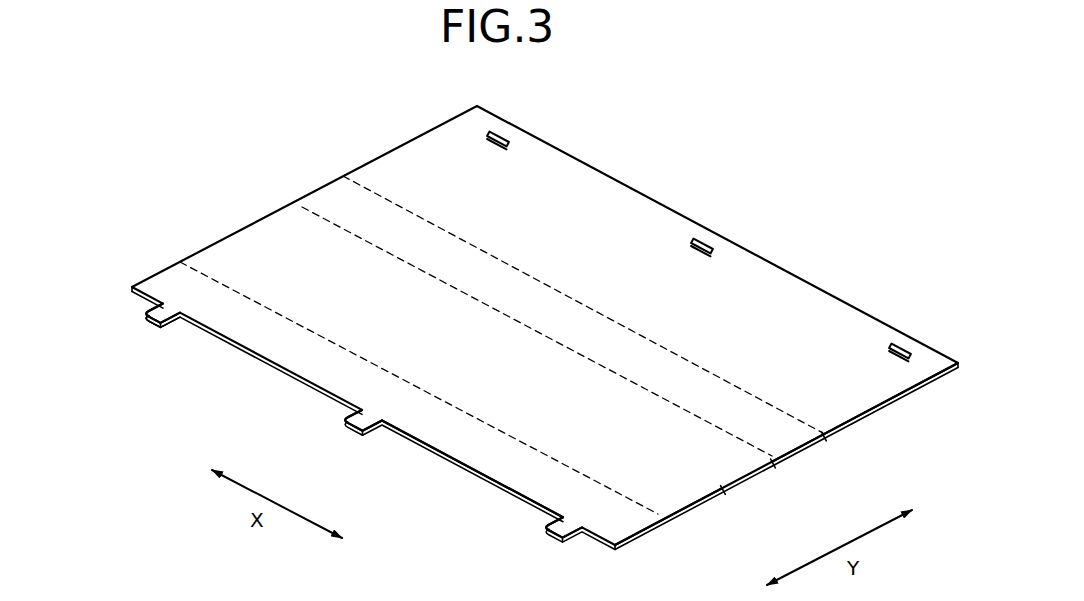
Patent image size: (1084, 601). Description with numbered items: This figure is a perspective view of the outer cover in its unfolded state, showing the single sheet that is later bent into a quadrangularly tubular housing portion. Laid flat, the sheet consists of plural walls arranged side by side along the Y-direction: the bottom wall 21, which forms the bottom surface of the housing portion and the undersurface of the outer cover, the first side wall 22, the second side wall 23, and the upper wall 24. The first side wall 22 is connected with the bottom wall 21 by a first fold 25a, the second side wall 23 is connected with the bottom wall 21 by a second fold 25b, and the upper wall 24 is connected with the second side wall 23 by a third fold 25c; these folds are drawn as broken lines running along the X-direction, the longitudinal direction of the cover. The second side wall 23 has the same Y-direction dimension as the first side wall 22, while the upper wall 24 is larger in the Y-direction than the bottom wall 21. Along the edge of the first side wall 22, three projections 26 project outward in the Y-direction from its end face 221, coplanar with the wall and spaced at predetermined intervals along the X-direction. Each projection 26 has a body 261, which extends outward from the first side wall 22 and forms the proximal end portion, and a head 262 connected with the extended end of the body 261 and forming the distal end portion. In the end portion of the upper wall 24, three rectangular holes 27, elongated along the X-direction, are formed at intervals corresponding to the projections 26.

The bottom wall 21 is at (722, 490).
The first side wall 22 is at (642, 535).
The second side wall 23 is at (807, 448).
The upper wall 24 is at (883, 407).
The end face 221 is at (500, 489).
The first fold 25a is at (458, 412).
The second fold 25b is at (302, 207).
The third fold 25c is at (745, 390).
The projection 26 is at (102, 332).
The body 261 is at (183, 320).
The head 262 is at (178, 328).
The hole 27 is at (499, 134).